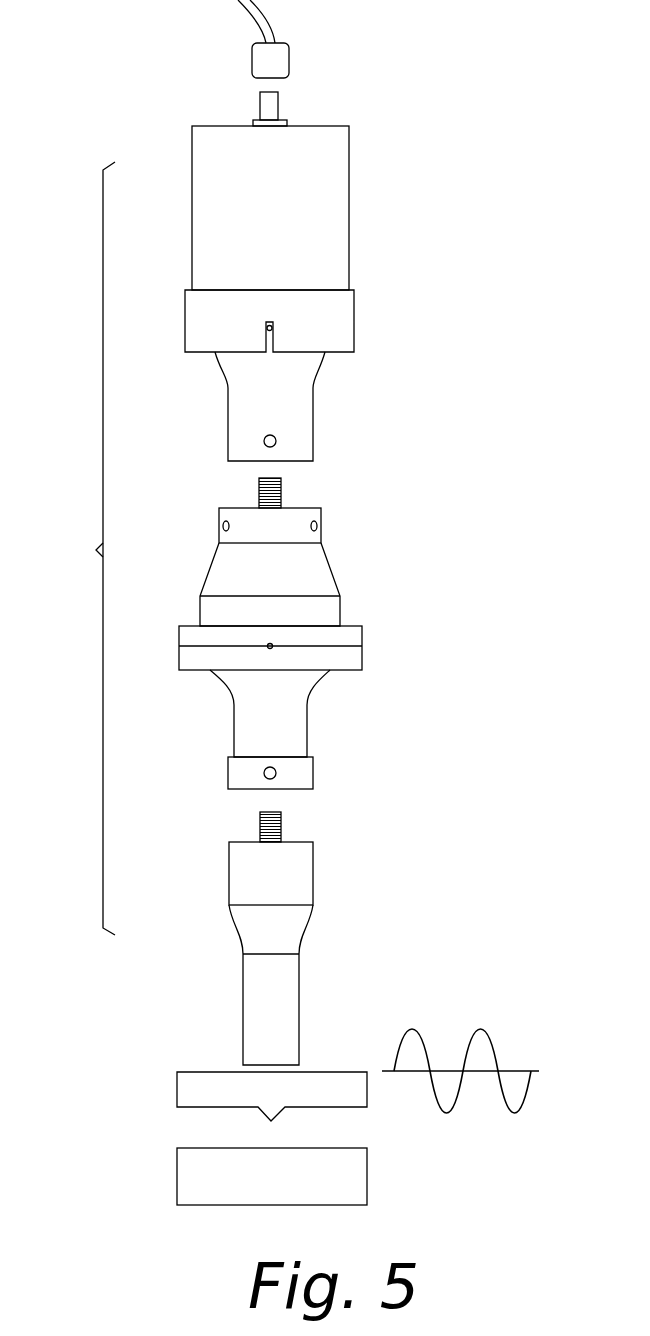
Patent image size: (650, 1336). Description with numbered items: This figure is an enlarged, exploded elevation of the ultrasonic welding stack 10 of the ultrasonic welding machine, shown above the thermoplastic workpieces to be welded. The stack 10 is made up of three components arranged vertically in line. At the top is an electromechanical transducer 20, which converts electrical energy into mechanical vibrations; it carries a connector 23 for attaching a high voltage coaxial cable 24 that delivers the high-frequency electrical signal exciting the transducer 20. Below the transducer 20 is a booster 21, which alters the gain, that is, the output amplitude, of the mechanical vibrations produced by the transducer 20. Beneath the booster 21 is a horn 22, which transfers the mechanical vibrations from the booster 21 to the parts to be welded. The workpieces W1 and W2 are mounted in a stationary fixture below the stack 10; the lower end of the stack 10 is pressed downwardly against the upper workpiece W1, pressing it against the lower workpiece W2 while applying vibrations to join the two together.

The ultrasonic welding stack 10 is at (90, 548).
The electromechanical transducer 20 is at (349, 243).
The booster 21 is at (343, 603).
The horn 22 is at (300, 983).
The connector 23 is at (278, 108).
The high voltage coaxial cable 24 is at (250, 60).
The upper workpiece W1 is at (196, 1084).
The lower workpiece W2 is at (196, 1181).